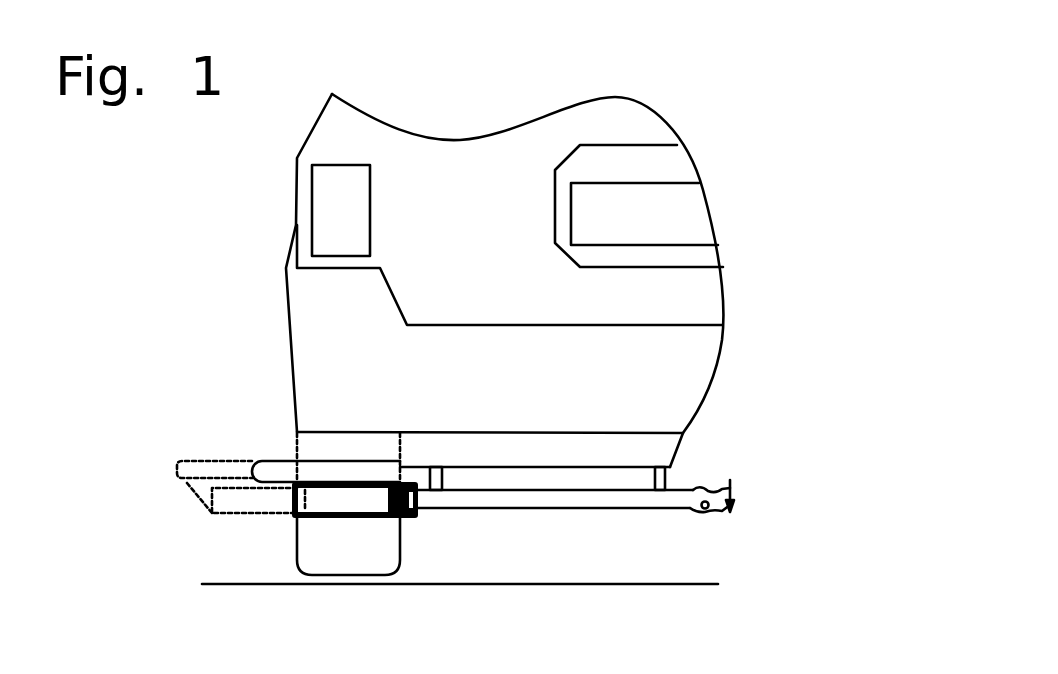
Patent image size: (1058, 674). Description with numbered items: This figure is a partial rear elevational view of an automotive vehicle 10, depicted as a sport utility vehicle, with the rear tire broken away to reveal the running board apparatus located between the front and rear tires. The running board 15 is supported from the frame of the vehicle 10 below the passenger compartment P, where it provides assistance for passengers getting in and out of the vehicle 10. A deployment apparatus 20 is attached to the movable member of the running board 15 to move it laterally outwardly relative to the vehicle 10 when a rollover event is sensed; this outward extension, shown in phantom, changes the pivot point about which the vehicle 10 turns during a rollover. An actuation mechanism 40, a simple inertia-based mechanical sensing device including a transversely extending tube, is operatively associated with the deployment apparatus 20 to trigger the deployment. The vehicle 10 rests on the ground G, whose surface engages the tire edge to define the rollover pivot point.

The vehicle 10 is at (542, 88).
The passenger compartment P is at (722, 175).
The running board 15 is at (272, 460).
The deployment apparatus 20 is at (347, 505).
The actuation mechanism 40 is at (543, 500).
The ground G is at (707, 583).